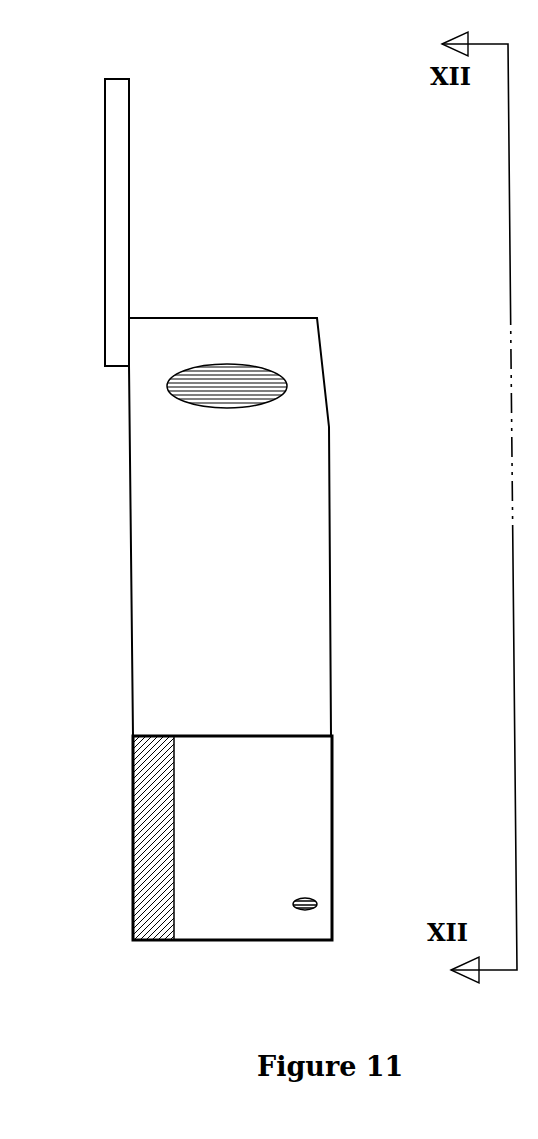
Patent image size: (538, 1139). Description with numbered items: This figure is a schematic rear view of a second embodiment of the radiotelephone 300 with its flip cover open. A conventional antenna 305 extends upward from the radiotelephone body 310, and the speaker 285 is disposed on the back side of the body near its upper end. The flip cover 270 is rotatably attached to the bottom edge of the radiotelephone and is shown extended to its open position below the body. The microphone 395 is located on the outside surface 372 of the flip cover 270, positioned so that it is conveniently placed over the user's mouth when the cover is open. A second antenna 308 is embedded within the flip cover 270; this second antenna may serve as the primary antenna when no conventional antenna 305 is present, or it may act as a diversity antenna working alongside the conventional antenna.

The radiotelephone 300 is at (128, 490).
The conventional antenna 305 is at (104, 206).
The radiotelephone body 310 is at (230, 527).
The speaker 285 is at (273, 365).
The flip cover element 270 is at (327, 778).
The outside surface 372 is at (215, 851).
The second antenna 308 is at (133, 873).
The microphone 395 is at (305, 893).